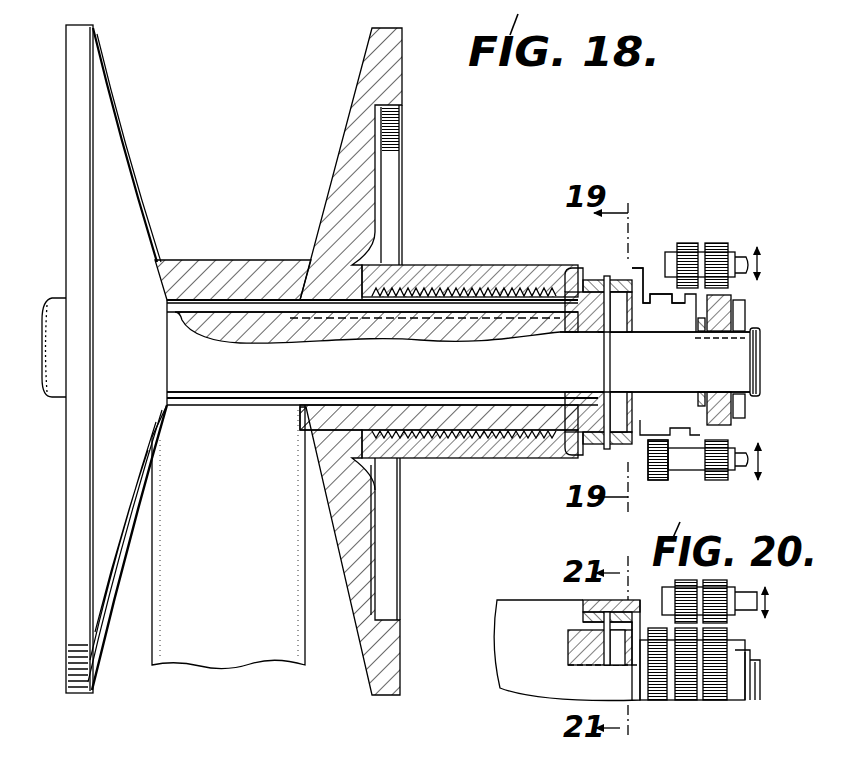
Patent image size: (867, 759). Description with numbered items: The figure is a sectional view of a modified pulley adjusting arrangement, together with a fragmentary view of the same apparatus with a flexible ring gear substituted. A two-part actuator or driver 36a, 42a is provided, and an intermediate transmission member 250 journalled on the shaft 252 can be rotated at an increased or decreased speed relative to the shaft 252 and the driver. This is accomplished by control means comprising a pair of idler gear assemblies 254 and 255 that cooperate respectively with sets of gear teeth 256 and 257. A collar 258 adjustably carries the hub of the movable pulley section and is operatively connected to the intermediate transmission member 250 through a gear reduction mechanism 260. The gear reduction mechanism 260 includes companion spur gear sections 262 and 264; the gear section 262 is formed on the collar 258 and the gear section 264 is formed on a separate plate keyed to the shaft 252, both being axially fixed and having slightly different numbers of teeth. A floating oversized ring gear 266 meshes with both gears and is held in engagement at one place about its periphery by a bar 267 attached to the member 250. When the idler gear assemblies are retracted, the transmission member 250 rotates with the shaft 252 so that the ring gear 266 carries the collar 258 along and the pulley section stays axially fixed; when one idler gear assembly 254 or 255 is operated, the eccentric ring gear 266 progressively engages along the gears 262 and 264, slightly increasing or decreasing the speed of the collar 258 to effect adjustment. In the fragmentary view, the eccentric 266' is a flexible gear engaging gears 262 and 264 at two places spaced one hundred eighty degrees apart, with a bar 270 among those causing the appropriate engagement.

In FIG. 18, the shaft 252 is at (458, 362).
In FIG. 18, the collar 258 is at (445, 452).
In FIG. 18, the spur gear section 262 is at (588, 302).
In FIG. 20, the spur gear section 262 is at (568, 647).
In FIG. 18, the floating oversized ring gear 266 is at (572, 336).
In FIG. 18, the spur gear section 264 is at (618, 418).
In FIG. 20, the spur gear section 264 is at (606, 664).
In FIG. 18, the gear reduction mechanism 260 is at (600, 252).
In FIG. 18, the bar 267 is at (622, 280).
In FIG. 18, the driver part 42a is at (740, 311).
In FIG. 20, the driver part 42a is at (730, 660).
In FIG. 18, the driver part 36a is at (732, 434).
In FIG. 20, the driver part 36a is at (728, 634).
In FIG. 18, the intermediate transmission member 250 is at (667, 336).
In FIG. 20, the intermediate transmission member 250 is at (692, 690).
In FIG. 18, the set of gear teeth 256 is at (760, 346).
In FIG. 18, the idler gear assembly 254 is at (716, 232).
In FIG. 20, the idler gear assembly 254 is at (732, 580).
In FIG. 18, the idler gear assembly 255 is at (724, 486).
In FIG. 18, the set of gear teeth 257 is at (680, 450).
In FIG. 20, the set of gear teeth 257 is at (657, 690).
In FIG. 20, the bar 270 is at (604, 600).
In FIG. 20, the flexible ring gear 266' is at (534, 611).